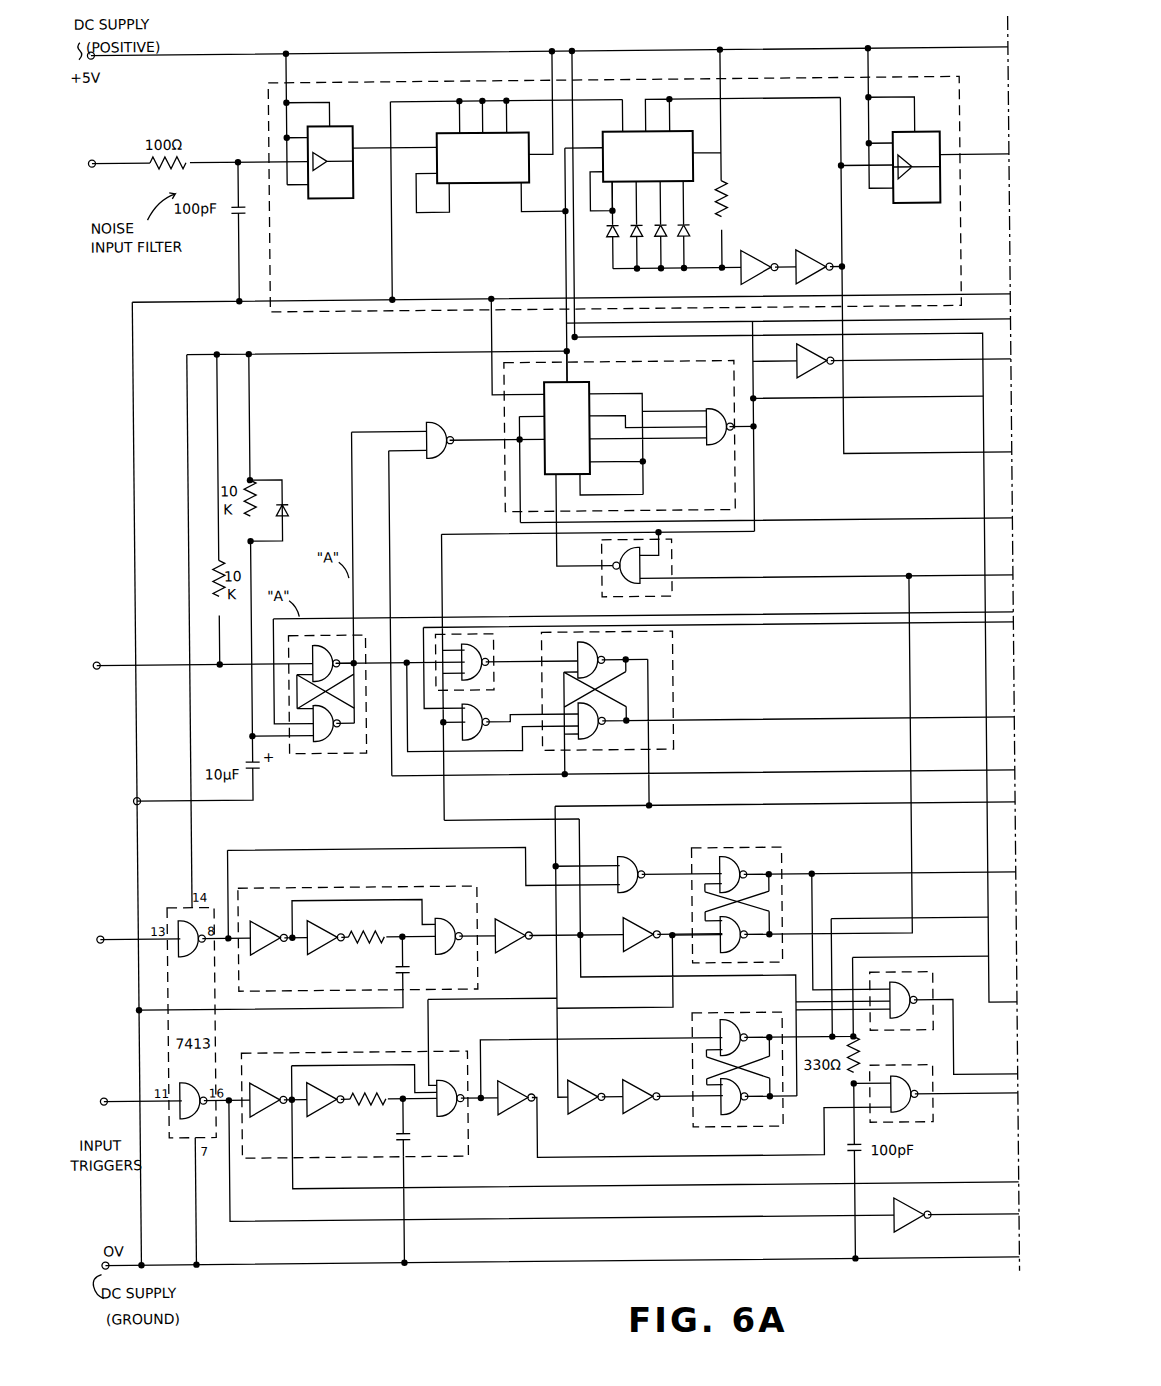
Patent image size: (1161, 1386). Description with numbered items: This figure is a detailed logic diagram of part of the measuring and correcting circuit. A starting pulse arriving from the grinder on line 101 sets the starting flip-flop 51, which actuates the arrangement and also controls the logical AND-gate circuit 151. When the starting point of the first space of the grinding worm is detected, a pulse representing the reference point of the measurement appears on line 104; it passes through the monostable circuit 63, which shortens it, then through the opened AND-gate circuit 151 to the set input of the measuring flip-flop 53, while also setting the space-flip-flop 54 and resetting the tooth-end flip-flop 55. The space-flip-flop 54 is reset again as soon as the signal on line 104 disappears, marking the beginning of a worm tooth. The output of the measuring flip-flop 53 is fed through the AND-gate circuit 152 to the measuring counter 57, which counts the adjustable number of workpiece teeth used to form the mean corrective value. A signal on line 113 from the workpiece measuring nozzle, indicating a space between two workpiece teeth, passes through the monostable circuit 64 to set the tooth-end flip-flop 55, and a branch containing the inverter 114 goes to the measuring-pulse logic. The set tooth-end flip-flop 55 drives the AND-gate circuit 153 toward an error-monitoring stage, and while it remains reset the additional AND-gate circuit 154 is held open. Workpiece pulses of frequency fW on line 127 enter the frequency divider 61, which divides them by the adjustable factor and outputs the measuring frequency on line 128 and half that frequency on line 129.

The frequency divider 61 is at (530, 74).
The measuring counter 57 is at (484, 402).
The starting flip-flop 51 is at (304, 766).
The measuring flip-flop 53 is at (678, 668).
The space-flip-flop 54 is at (789, 848).
The tooth-end flip-flop 55 is at (681, 1120).
The monostable circuit 63 is at (425, 878).
The monostable circuit 64 is at (425, 1044).
The logical AND-gate circuit 151 is at (503, 626).
The logical AND-gate circuit 152 is at (672, 577).
The logical AND-gate circuit 153 is at (920, 967).
The logical AND-gate circuit 154 is at (924, 1125).
The inverter 114 is at (904, 1228).
The line 127 is at (127, 162).
The line 101 is at (126, 650).
The line 104 is at (126, 924).
The line 113 is at (126, 1086).
The line 128 is at (846, 446).
The line 129 is at (990, 166).